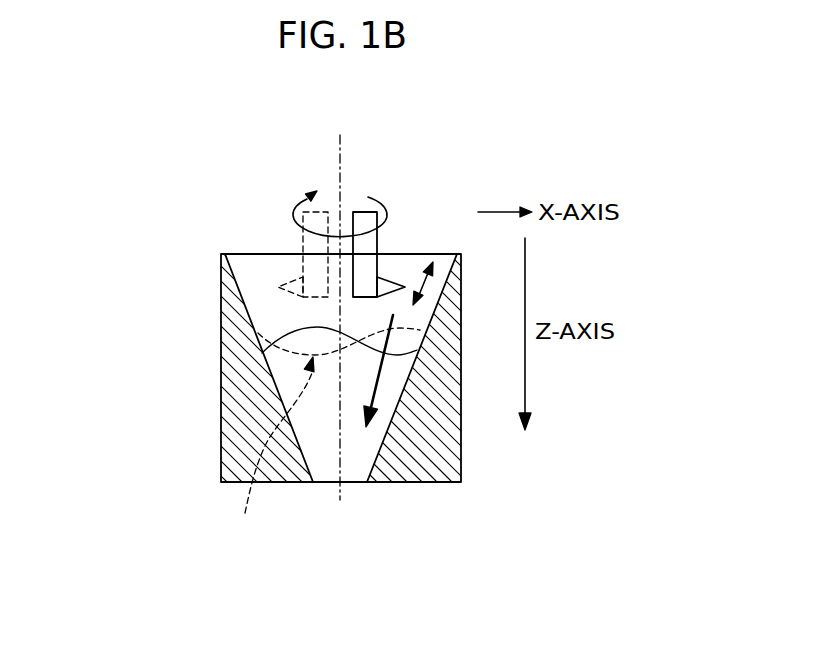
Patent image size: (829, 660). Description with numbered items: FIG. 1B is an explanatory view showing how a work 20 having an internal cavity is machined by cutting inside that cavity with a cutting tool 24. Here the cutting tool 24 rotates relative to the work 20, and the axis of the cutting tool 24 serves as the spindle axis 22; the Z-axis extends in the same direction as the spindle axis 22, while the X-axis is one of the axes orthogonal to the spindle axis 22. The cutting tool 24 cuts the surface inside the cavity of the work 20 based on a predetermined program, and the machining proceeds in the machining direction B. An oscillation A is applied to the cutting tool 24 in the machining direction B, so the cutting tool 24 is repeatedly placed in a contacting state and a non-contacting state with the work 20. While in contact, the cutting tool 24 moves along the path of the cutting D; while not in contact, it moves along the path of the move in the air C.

The work 20 is at (220, 410).
The spindle axis 22 is at (341, 304).
The cutting tool 24 is at (378, 233).
The oscillation A is at (423, 283).
The machining direction B is at (380, 377).
The move in the air C is at (347, 435).
The cutting D is at (282, 320).